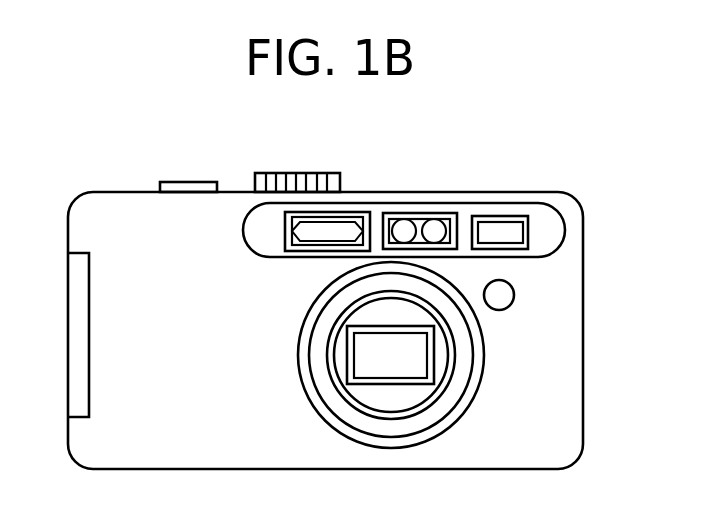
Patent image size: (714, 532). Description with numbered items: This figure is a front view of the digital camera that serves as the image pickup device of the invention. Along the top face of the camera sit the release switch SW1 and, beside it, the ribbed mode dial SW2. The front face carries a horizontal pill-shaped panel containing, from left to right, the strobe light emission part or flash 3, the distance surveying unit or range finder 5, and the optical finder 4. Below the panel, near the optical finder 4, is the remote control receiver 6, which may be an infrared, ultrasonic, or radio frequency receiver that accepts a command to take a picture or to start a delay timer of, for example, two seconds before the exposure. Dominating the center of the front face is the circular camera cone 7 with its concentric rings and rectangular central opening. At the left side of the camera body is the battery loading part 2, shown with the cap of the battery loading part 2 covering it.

The battery loading part 2 is at (75, 335).
The release switch SW1 is at (196, 182).
The mode dial SW2 is at (310, 173).
The strobe light emission part 3 is at (350, 220).
The optical finder 4 is at (512, 237).
The distance surveying unit 5 is at (420, 223).
The remote control receiver 6 is at (498, 303).
The camera cone 7 is at (413, 397).